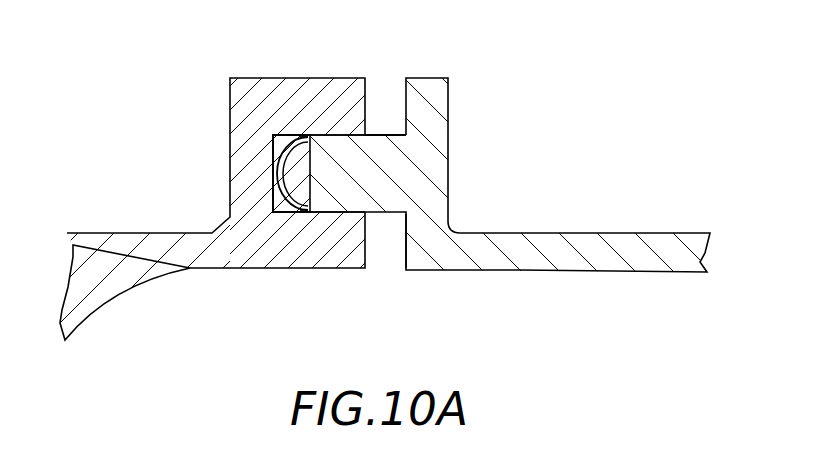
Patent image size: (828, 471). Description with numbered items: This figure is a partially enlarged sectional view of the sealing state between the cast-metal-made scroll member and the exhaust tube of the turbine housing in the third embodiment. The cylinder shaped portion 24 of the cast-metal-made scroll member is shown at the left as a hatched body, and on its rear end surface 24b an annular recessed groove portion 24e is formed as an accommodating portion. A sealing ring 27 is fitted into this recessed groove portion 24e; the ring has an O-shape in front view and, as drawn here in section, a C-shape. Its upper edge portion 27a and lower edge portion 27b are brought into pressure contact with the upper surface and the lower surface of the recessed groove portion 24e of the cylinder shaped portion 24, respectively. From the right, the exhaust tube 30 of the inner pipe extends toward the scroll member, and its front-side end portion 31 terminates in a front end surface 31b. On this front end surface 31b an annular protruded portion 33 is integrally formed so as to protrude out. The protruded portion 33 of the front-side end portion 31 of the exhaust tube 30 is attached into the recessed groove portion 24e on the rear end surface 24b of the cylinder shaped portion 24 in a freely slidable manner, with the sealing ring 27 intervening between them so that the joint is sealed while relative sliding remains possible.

The cylinder shaped portion 24 is at (128, 231).
The rear end surface 24b is at (366, 252).
The recessed groove portion 24e is at (273, 163).
The sealing ring 27 is at (284, 172).
The upper edge portion 27a is at (312, 140).
The lower edge portion 27b is at (297, 214).
The protruded portion 33 is at (377, 134).
The front-side end portion 31 is at (487, 272).
The front end surface 31b is at (406, 248).
The exhaust tube 30 is at (621, 232).